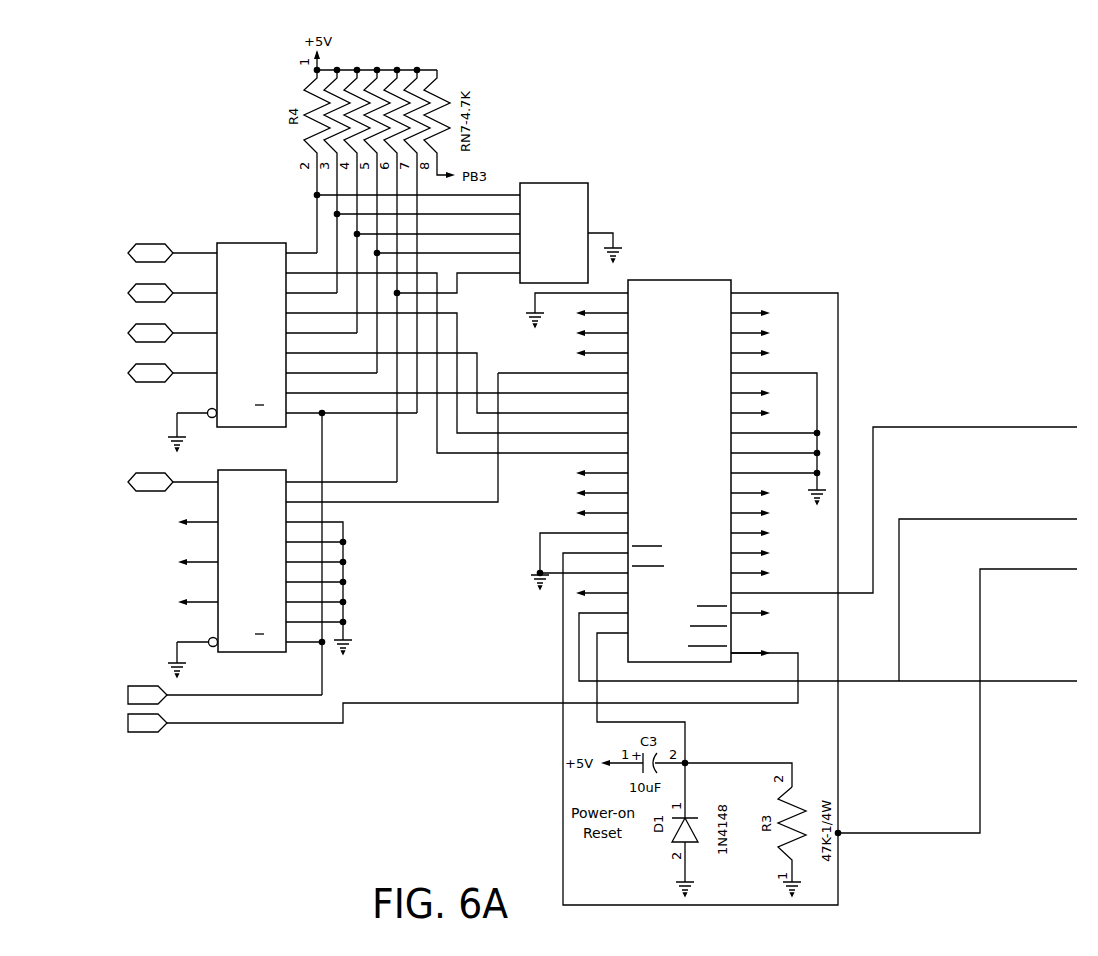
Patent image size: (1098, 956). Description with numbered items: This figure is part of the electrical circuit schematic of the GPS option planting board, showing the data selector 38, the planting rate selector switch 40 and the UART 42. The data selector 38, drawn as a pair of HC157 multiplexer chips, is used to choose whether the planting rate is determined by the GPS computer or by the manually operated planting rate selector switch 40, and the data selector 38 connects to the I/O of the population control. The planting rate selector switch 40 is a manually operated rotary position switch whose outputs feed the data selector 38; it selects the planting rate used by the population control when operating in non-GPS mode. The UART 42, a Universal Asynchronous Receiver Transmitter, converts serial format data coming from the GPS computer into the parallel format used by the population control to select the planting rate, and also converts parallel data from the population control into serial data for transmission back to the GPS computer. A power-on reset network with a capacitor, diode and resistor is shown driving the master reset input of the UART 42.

The data selector 38 is at (215, 252).
The planting rate selector switch 40 is at (592, 183).
The UART 42 is at (732, 280).